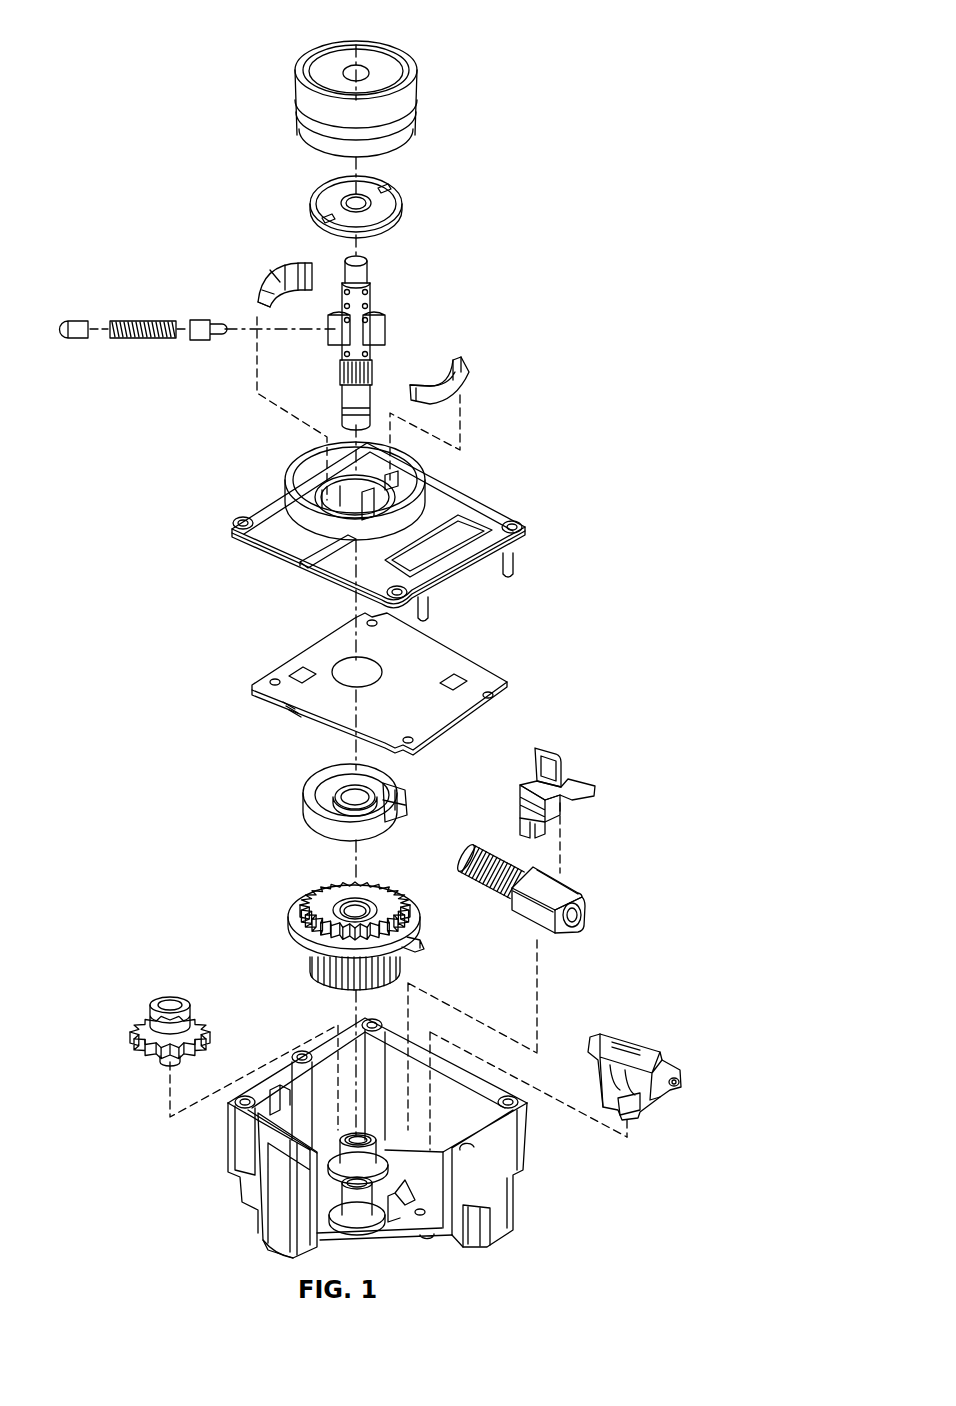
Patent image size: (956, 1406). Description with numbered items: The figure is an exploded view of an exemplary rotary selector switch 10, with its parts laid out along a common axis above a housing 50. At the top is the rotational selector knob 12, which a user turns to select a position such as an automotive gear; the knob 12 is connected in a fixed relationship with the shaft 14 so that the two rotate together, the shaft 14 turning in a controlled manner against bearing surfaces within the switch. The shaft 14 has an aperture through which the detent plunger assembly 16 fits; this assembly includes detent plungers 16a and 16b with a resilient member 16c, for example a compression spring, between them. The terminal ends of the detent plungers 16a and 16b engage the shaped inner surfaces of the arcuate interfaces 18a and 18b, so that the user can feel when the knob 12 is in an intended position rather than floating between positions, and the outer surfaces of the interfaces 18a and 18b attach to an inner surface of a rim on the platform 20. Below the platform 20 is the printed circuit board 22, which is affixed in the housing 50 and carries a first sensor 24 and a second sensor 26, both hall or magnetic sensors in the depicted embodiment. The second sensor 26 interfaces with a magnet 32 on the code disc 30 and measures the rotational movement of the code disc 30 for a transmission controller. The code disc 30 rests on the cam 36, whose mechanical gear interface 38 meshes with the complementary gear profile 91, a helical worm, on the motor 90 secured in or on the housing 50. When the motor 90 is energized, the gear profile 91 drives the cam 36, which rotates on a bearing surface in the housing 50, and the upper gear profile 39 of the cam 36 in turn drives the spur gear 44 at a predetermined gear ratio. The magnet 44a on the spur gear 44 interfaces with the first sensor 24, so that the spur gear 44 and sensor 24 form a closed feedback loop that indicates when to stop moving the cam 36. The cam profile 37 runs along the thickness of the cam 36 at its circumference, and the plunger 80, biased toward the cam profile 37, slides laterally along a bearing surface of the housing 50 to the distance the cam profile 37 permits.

The rotary selector switch 10 is at (152, 52).
The rotational selector knob 12 is at (420, 96).
The shaft 14 is at (376, 298).
The detent plunger assembly 16 is at (187, 329).
The detent plunger 16a is at (76, 341).
The detent plunger 16b is at (146, 341).
The resilient member 16c is at (198, 342).
The interface 18a is at (270, 268).
The interface 18b is at (468, 368).
The platform 20 is at (470, 463).
The printed circuit board 22 is at (394, 684).
The first sensor 24 is at (302, 667).
The second sensor 26 is at (454, 674).
The code disc 30 is at (348, 805).
The magnet 32 is at (386, 786).
The cam 36 is at (357, 940).
The cam profile 37 is at (427, 945).
The mechanical gear interface 38 is at (318, 970).
The upper gear profile 39 is at (404, 900).
The spur gear 44 is at (138, 1037).
The magnet 44a is at (152, 1003).
The housing 50 is at (498, 1183).
The plunger 80 is at (598, 1033).
The motor 90 is at (523, 900).
The gear profile 91 is at (480, 847).